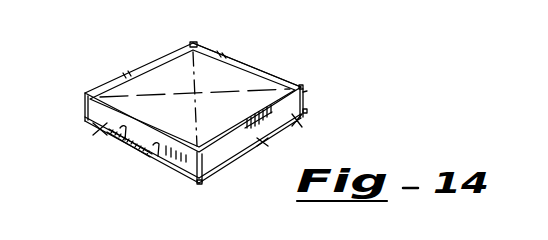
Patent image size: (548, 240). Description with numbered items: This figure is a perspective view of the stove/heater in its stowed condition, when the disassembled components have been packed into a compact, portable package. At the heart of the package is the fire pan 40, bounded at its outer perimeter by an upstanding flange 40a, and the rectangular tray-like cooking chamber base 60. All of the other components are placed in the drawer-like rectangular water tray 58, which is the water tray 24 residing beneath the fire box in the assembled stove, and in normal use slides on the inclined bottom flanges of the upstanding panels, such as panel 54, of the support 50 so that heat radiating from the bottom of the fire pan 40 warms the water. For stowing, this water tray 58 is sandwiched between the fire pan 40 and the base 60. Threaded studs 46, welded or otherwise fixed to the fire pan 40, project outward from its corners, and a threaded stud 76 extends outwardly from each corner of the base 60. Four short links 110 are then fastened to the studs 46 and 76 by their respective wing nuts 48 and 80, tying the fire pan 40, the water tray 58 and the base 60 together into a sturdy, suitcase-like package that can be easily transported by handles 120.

The fire pan 40 is at (203, 63).
The upstanding flange 40a is at (235, 62).
The short links 110 is at (84, 97).
The wing nuts 48 is at (301, 85).
The threaded studs 46 is at (306, 88).
The upstanding panel 54 is at (297, 122).
The support 50 is at (265, 143).
The cooking chamber base 60 is at (243, 157).
The wing nuts 80 is at (204, 183).
The threaded stud 76 is at (196, 186).
The water tray 58 is at (155, 156).
The handles 120 is at (129, 151).
The rectangular water tray 24 is at (96, 133).